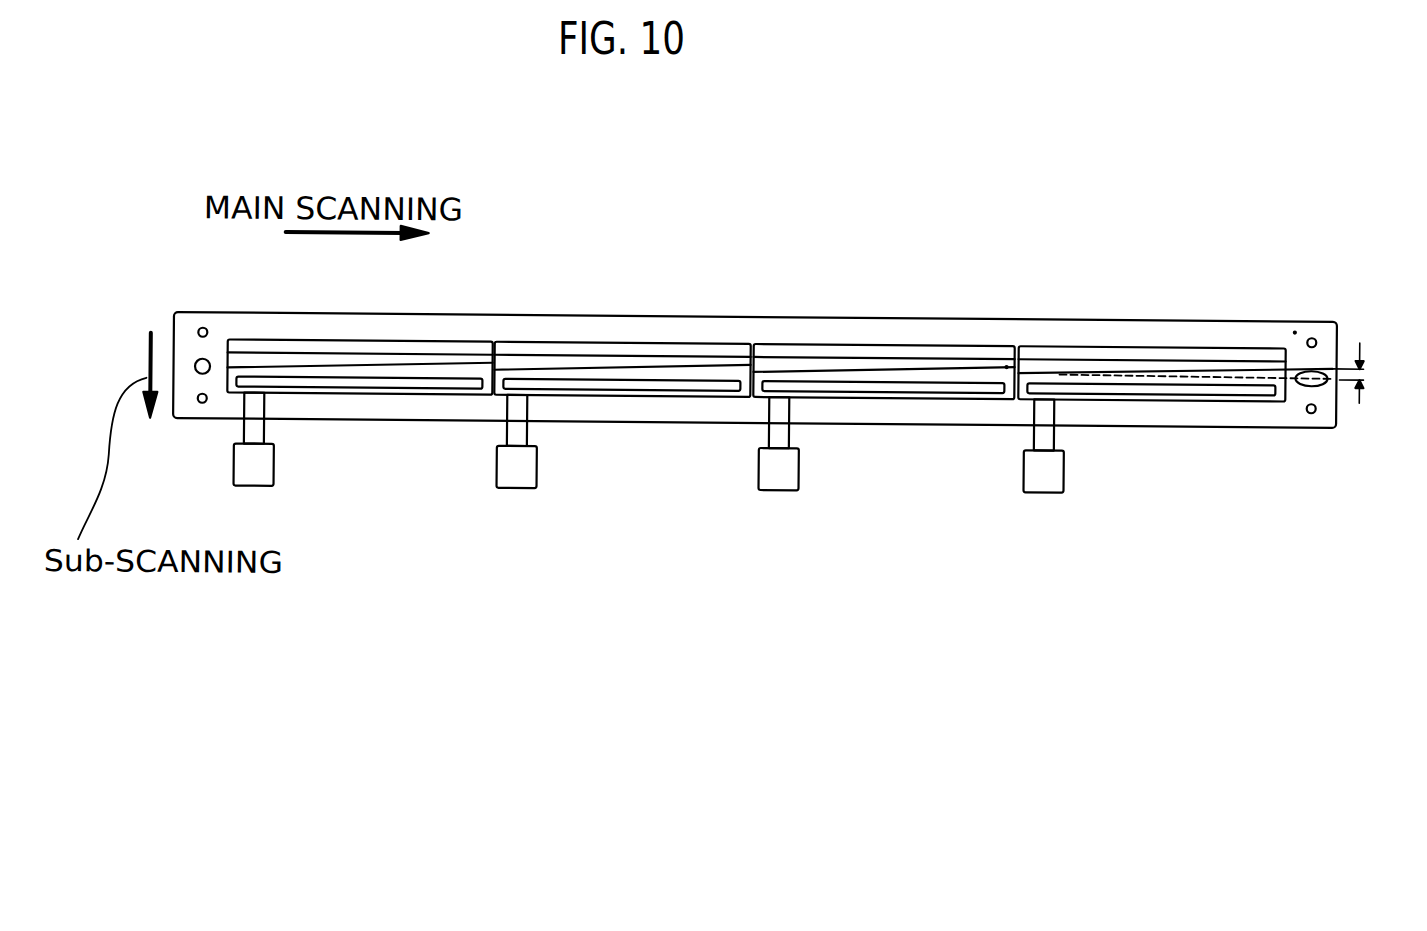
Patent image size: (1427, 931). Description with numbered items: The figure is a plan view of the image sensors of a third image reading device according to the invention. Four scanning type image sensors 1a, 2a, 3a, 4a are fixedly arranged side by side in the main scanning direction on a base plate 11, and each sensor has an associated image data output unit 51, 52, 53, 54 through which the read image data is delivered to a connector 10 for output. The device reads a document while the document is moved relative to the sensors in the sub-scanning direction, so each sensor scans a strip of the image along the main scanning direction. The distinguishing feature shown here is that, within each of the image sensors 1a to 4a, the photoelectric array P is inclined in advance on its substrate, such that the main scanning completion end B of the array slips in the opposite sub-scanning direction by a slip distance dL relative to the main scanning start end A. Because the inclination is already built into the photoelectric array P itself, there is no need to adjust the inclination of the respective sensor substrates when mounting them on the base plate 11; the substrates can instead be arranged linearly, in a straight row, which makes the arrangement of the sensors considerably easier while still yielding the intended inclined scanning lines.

The connector 10 is at (262, 472).
The base plate 11 is at (522, 325).
The image sensor 1a is at (397, 339).
The image sensor 2a is at (680, 338).
The image sensor 3a is at (903, 339).
The image sensor 4a is at (1178, 339).
The image data output unit 51 is at (387, 392).
The image data output unit 52 is at (668, 391).
The image data output unit 53 is at (945, 393).
The image data output unit 54 is at (1212, 395).
The photoelectric array P is at (308, 357).
The main scanning start end A is at (1007, 358).
The main scanning completion end B is at (1295, 322).
The slip distance dL is at (1233, 372).